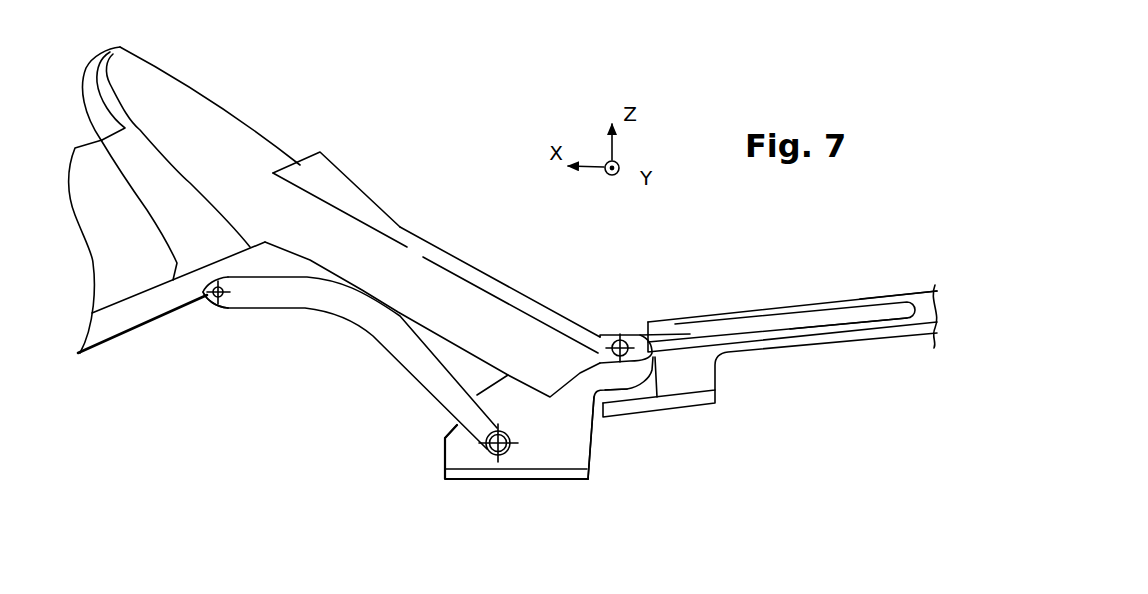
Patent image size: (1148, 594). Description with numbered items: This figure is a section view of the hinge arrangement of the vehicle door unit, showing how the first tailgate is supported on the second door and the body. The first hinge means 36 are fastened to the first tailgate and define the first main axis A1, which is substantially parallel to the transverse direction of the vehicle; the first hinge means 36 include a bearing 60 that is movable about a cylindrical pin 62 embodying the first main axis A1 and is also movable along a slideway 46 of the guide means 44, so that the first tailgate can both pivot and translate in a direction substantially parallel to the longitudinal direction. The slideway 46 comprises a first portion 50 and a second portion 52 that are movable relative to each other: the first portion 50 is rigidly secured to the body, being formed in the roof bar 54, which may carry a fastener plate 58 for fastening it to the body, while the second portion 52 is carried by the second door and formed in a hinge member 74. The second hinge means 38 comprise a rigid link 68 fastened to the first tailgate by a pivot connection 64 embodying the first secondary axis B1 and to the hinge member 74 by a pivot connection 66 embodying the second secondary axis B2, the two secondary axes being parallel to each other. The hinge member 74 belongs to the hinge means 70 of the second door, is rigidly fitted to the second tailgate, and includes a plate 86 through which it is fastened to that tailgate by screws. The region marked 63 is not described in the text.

The first hinge means 36 is at (650, 298).
The second hinge means 38 is at (372, 369).
The guide means 44 is at (893, 304).
The slideway 46 is at (833, 325).
The first portion 50 is at (793, 320).
The second portion 52 is at (656, 360).
The roof bar 54 is at (755, 299).
The fastener plate 58 is at (722, 402).
The bearing 60 is at (671, 337).
The cylindrical pin 62 is at (613, 340).
The base upper portion 63 is at (430, 431).
The pivot connection 64 is at (207, 314).
The pivot connection 66 is at (482, 448).
The rigid link 68 is at (347, 308).
The hinge means 70 is at (618, 440).
The hinge member 74 is at (580, 452).
The plate 86 is at (447, 473).
The first main axis A1 is at (630, 338).
The first secondary pivot axis B1 is at (226, 294).
The second secondary pivot axis B2 is at (512, 453).